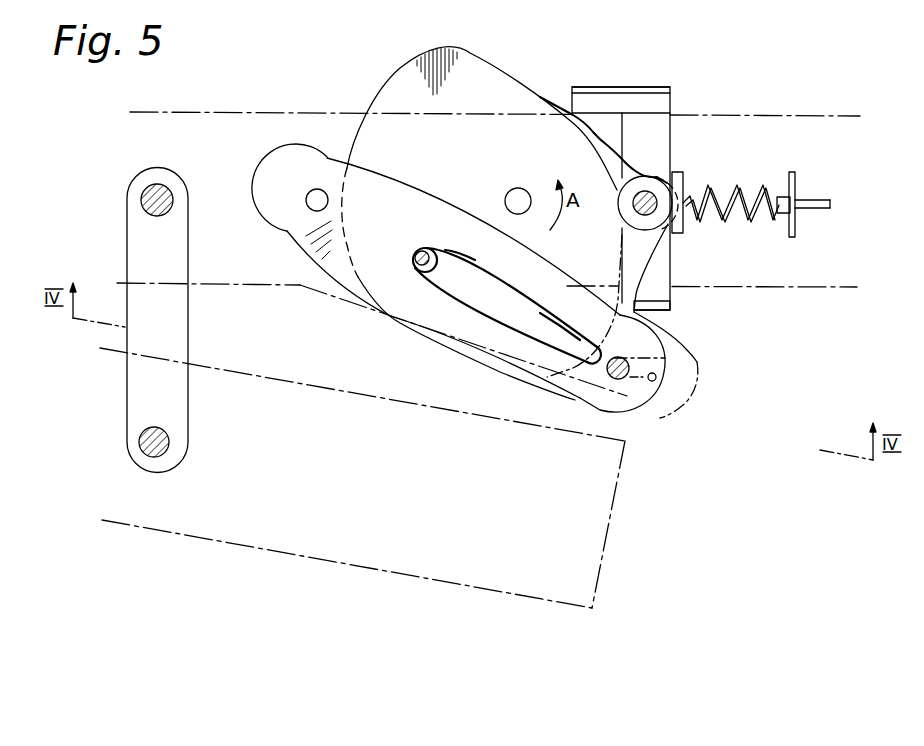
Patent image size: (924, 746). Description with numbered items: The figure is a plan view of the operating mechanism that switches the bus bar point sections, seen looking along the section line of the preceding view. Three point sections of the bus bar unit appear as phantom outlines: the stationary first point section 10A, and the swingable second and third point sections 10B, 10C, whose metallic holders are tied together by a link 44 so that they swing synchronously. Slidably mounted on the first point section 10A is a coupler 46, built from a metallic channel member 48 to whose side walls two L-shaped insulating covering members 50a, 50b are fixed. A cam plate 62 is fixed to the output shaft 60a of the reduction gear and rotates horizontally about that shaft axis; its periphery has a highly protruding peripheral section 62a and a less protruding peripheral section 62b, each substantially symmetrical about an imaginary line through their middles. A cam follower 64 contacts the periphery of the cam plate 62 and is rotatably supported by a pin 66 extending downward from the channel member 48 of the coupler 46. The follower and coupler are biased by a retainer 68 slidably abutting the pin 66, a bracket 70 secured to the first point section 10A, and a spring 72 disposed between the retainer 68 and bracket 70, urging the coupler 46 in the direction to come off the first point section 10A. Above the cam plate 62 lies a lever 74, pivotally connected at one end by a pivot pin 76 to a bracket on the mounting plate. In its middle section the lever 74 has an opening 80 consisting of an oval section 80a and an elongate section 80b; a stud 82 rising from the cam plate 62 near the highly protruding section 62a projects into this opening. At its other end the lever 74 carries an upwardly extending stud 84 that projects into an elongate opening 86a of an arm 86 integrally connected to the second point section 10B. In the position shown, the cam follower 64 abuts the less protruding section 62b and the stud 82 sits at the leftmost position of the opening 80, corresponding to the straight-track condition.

The first point section 10A is at (788, 115).
The second point section 10B is at (270, 113).
The third point section 10C is at (267, 378).
The link 44 is at (188, 318).
The coupler 46 is at (631, 90).
The channel member 48 is at (618, 87).
The covering member 50a is at (671, 308).
The covering member 50b is at (600, 92).
The output shaft 60a is at (519, 188).
The cam plate 62 is at (477, 72).
The highly protruding peripheral section 62a is at (391, 327).
The less protruding peripheral section 62b is at (518, 83).
The cam follower 64 is at (622, 223).
The pin 66 is at (645, 191).
The retainer 68 is at (685, 229).
The bracket 70 is at (794, 231).
The spring 72 is at (717, 190).
The lever 74 is at (327, 157).
The pivot pin 76 is at (308, 212).
The opening 80 is at (493, 312).
The oval section 80a is at (459, 256).
The elongate section 80b is at (548, 317).
The stud 82 is at (424, 270).
The stud 84 is at (622, 380).
The arm 86 is at (697, 359).
The elongate opening 86a is at (660, 404).